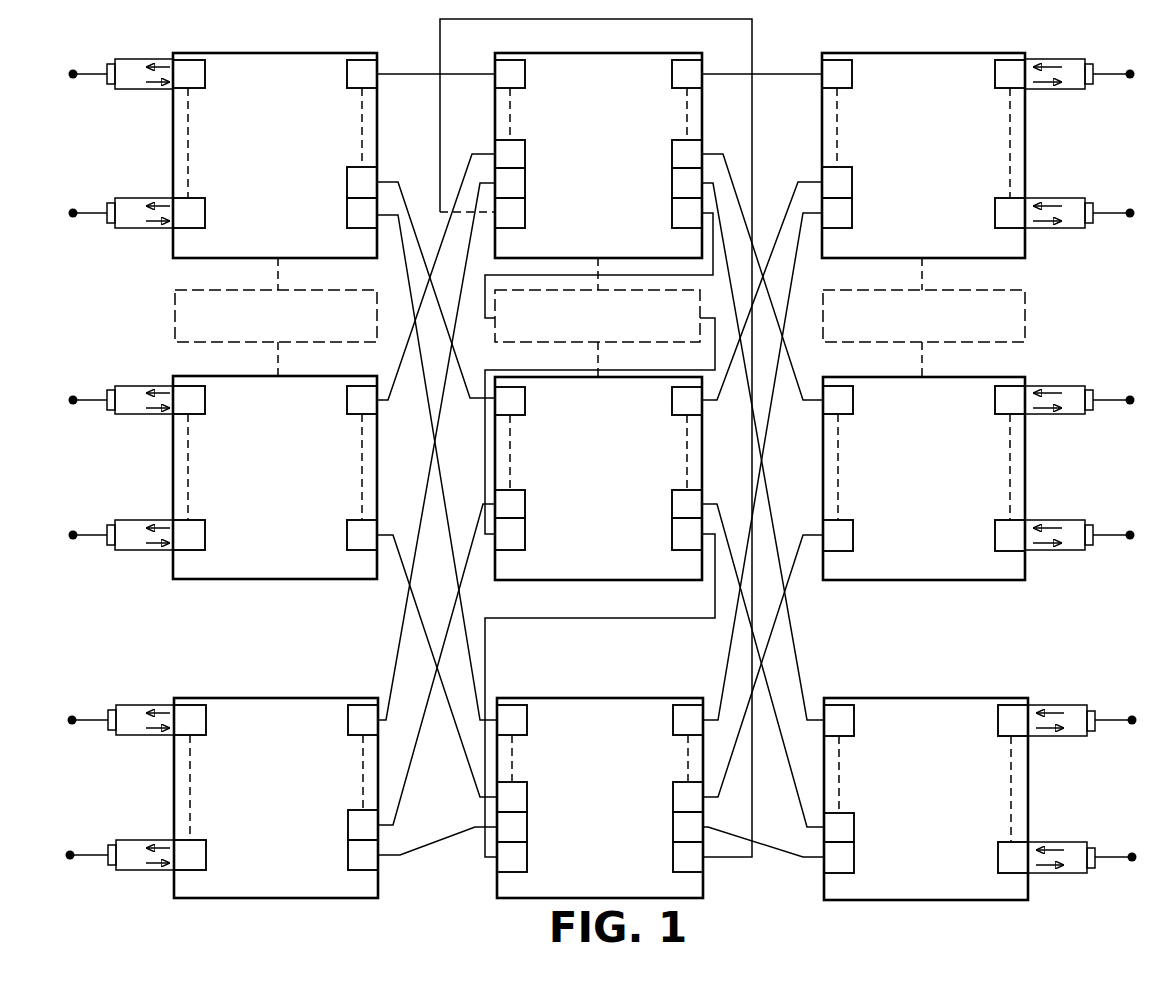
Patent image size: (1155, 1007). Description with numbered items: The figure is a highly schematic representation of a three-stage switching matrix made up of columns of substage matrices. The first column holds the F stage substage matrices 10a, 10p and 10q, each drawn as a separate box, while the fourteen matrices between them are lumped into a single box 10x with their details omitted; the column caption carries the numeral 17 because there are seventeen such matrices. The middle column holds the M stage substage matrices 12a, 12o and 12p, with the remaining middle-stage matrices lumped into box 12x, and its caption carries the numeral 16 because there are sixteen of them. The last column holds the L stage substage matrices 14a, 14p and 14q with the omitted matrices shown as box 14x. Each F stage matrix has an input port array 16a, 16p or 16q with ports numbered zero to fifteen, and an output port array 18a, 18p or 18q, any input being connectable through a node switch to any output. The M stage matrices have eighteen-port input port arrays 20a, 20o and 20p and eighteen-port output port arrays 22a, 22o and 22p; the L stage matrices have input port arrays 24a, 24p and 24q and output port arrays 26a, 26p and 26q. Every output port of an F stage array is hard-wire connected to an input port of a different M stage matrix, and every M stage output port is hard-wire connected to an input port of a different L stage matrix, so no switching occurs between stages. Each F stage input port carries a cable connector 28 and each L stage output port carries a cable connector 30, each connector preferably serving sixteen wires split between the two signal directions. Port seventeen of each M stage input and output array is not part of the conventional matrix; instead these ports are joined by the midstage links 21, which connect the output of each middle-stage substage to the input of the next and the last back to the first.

The F stage substage matrix 10a is at (275, 155).
The F stage substage matrix 10p is at (275, 477).
The F stage substage matrix 10q is at (276, 798).
The lumped F stage matrices box 10x is at (223, 343).
The M stage substage matrix 12a is at (598, 155).
The M stage substage matrix 12o is at (598, 478).
The M stage substage matrix 12p is at (600, 798).
The lumped M stage matrices box 12x is at (554, 343).
The L stage substage matrix 14a is at (923, 155).
The L stage substage matrix 14p is at (924, 478).
The L stage substage matrix 14q is at (926, 799).
The lumped L stage matrices box 14x is at (869, 343).
The input ports of F stage matrices 16 is at (604, 38).
The midstage link port 17 is at (599, 37).
The input port array 16a is at (189, 143).
The input port array 16p is at (189, 485).
The input port array 16q is at (190, 780).
The output port array 18a is at (361, 140).
The output port array 18p is at (361, 487).
The output port array 18q is at (348, 825).
The input port array 20a is at (527, 158).
The input port array 20o is at (527, 501).
The input port array 20p is at (528, 804).
The output port array 22a is at (671, 158).
The output port array 22o is at (671, 501).
The output port array 22p is at (672, 836).
The input port array 24a is at (853, 213).
The input port array 24p is at (840, 492).
The input port array 24q is at (840, 794).
The output port array 26a is at (1009, 190).
The output port array 26p is at (1009, 452).
The output port array 26q is at (1010, 805).
The cable connector 28 is at (141, 90).
The cable connector 30 is at (1052, 90).
The midstage link 21 is at (440, 146).